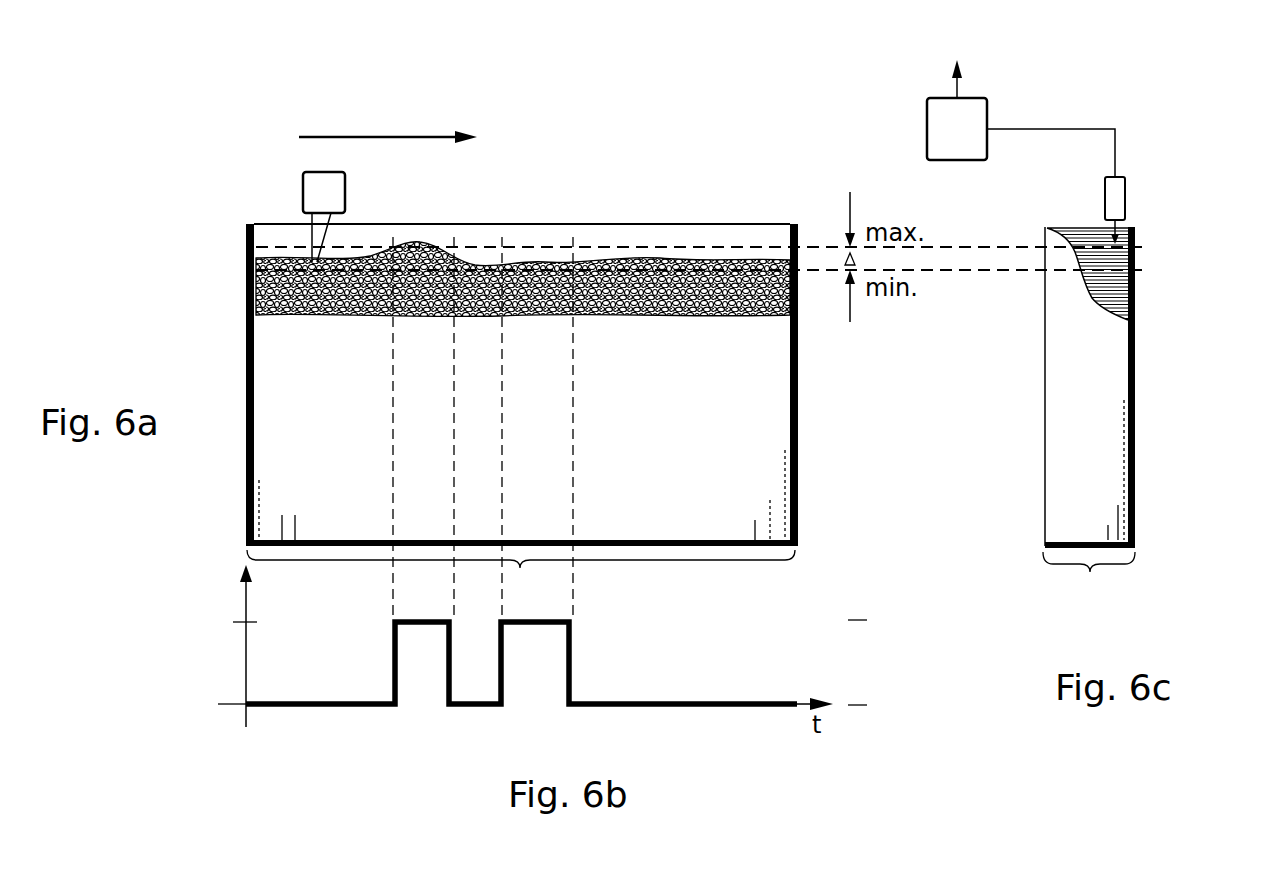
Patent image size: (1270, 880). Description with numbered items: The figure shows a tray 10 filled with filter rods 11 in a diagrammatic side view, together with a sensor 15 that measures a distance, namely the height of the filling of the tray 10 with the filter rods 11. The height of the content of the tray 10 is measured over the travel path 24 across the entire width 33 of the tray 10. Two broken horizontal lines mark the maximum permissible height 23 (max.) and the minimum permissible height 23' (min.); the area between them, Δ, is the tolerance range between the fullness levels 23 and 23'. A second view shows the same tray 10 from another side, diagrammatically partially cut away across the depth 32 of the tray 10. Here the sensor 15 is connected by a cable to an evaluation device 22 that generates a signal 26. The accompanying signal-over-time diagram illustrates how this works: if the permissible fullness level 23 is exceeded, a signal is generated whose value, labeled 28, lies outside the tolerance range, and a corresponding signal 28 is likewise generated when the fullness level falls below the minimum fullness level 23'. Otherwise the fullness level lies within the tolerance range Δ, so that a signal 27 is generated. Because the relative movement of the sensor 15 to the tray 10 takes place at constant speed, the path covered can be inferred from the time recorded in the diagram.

In FIG. 6a, the tray 10 is at (800, 380).
In FIG. 6c, the tray 10 is at (1060, 408).
In FIG. 6a, the filter rods 11 is at (641, 258).
In FIG. 6a, the sensor 15 is at (306, 192).
In FIG. 6c, the sensor 15 is at (1123, 190).
In FIG. 6c, the evaluation device 22 is at (975, 113).
In FIG. 6c, the maximum permissible height 23 is at (1041, 216).
In FIG. 6c, the minimum permissible height 23' is at (1041, 308).
In FIG. 6a, the travel path 24 is at (373, 137).
In FIG. 6c, the signal 26 is at (957, 93).
In FIG. 6b, the signal 27 is at (240, 704).
In FIG. 6b, the signal 28 is at (240, 622).
In FIG. 6c, the depth 32 is at (1090, 572).
In FIG. 6a, the width 33 is at (520, 570).